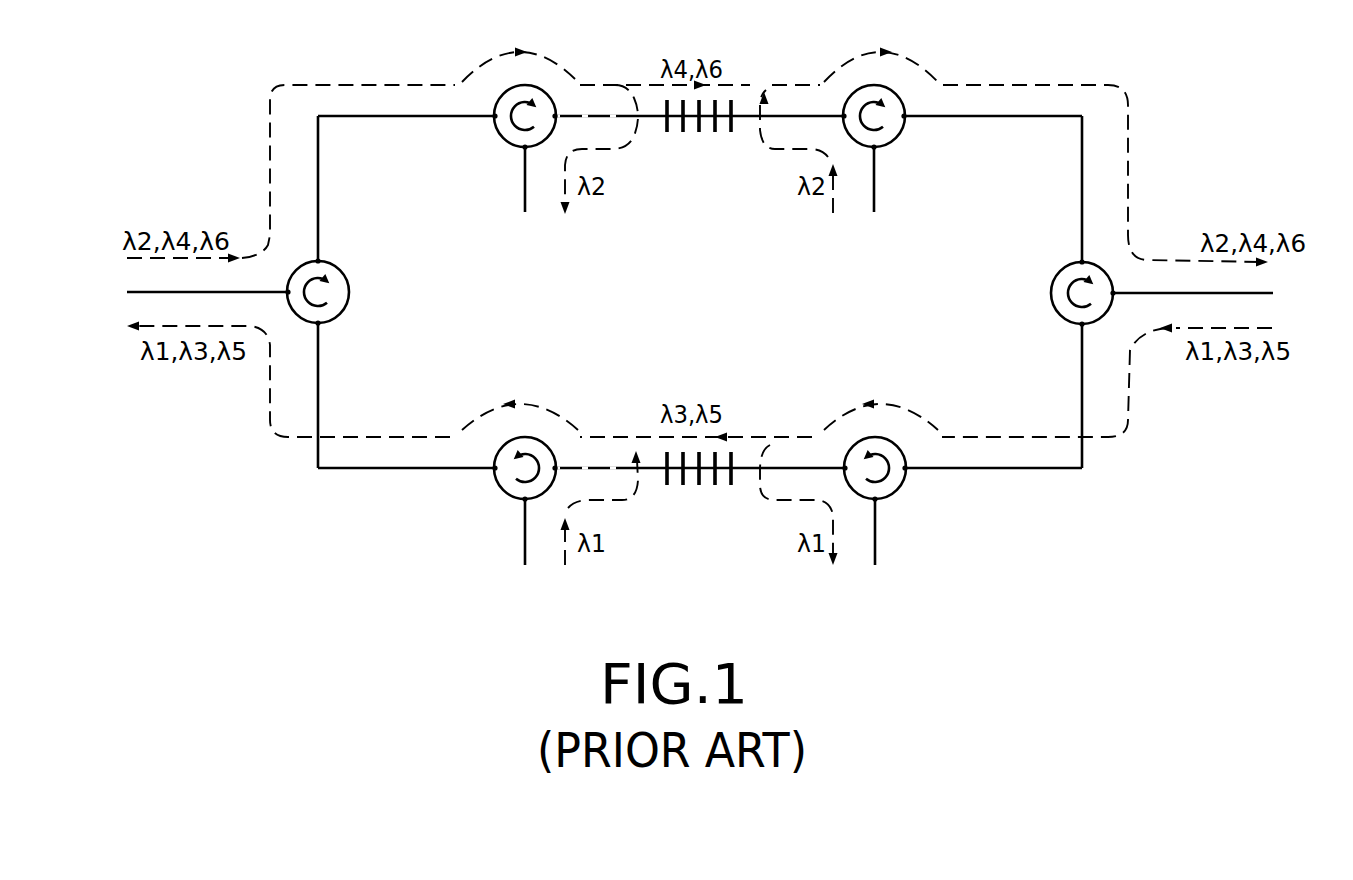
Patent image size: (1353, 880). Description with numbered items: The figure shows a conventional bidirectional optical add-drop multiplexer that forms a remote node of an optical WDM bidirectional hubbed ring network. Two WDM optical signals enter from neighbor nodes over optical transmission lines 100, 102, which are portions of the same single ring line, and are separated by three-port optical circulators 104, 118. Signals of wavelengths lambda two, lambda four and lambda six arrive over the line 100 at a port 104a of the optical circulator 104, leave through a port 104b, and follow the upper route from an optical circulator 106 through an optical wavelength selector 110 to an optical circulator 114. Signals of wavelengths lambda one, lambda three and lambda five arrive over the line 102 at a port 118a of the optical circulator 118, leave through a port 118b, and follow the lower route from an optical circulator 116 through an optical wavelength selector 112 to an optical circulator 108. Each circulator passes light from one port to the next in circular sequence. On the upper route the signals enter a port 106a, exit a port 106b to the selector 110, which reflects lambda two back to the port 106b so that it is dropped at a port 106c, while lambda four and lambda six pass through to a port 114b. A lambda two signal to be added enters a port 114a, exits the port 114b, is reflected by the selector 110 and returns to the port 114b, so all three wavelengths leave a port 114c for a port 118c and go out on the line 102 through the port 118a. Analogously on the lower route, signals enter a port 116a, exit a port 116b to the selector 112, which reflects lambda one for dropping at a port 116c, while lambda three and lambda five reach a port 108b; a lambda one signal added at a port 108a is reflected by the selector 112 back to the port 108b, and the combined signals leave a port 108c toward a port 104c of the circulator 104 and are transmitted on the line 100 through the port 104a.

The optical transmission line 100 is at (145, 292).
The optical transmission line 102 is at (1242, 292).
The optical circulator 104 is at (350, 292).
The port 104a is at (292, 277).
The port 104b is at (320, 262).
The port 104c is at (322, 323).
The optical circulator 106 is at (503, 92).
The port 106a is at (496, 126).
The port 106b is at (550, 92).
The port 106c is at (516, 160).
The optical circulator 108 is at (525, 437).
The port 108a is at (520, 497).
The port 108b is at (552, 452).
The port 108c is at (494, 472).
The optical wavelength selector 110 is at (698, 140).
The optical wavelength selector 112 is at (700, 493).
The optical circulator 114 is at (900, 135).
The port 114a is at (878, 148).
The port 114b is at (852, 95).
The port 114c is at (898, 95).
The optical circulator 116 is at (876, 437).
The port 116a is at (905, 455).
The port 116b is at (845, 455).
The port 116c is at (880, 505).
The optical circulator 118 is at (1050, 293).
The port 118a is at (1118, 280).
The port 118b is at (1080, 324).
The port 118c is at (1082, 262).